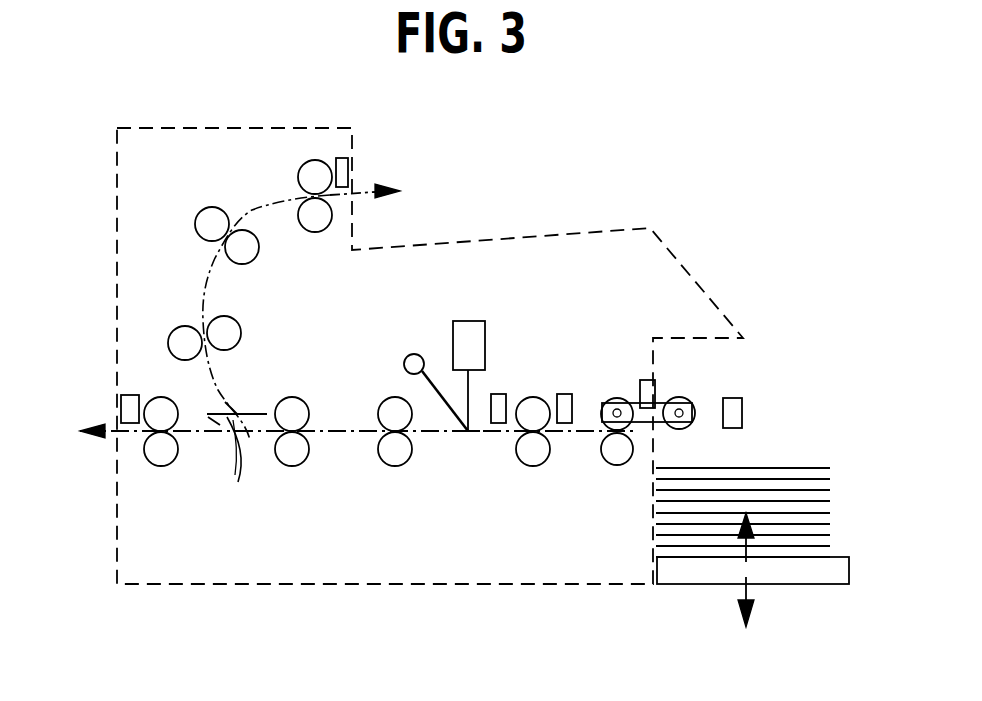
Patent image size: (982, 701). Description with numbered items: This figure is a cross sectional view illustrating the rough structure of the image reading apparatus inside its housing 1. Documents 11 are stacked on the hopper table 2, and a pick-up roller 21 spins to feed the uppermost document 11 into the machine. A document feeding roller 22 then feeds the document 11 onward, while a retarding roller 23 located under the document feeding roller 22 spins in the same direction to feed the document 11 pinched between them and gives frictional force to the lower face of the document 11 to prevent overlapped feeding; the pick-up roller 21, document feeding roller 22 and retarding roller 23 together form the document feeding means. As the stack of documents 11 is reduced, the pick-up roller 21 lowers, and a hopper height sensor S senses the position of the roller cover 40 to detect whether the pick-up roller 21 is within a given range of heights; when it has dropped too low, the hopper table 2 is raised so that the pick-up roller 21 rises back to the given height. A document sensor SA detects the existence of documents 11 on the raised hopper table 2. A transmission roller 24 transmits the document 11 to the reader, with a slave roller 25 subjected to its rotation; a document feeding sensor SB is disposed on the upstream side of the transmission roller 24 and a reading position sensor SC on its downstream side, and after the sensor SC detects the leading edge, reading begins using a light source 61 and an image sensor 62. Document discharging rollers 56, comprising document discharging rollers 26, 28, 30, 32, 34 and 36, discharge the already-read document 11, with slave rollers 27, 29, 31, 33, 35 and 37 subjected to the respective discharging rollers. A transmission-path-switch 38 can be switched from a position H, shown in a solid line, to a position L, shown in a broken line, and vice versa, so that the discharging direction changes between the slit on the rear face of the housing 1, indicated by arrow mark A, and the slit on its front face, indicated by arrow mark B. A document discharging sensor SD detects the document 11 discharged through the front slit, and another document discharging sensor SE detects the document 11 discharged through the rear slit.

The housing 1 is at (117, 137).
The hopper table 2 is at (810, 573).
The documents 11 is at (818, 467).
The pick-up roller 21 is at (692, 400).
The document feeding roller 22 is at (620, 398).
The retarding roller 23 is at (620, 463).
The transmission roller 24 is at (533, 398).
The slave roller 25 is at (530, 463).
The document discharging roller 26 is at (378, 430).
The slave roller 27 is at (397, 463).
The document discharging roller 28 is at (300, 403).
The slave roller 29 is at (292, 463).
The document discharging roller 30 is at (222, 331).
The slave roller 31 is at (183, 342).
The document discharging roller 32 is at (238, 250).
The slave roller 33 is at (207, 224).
The document discharging roller 34 is at (305, 212).
The slave roller 35 is at (310, 178).
The document discharging roller 36 is at (160, 407).
The slave roller 37 is at (155, 460).
The transmission-path-switch 38 is at (233, 420).
The roller cover 40 is at (662, 404).
The document discharging rollers 56 is at (315, 310).
The light source 61 is at (418, 356).
The image sensor 62 is at (478, 330).
The arrow mark A is at (79, 430).
The arrow mark B is at (399, 187).
The position H is at (237, 399).
The position L is at (241, 455).
The hopper height sensor S is at (652, 380).
The document sensor SA is at (742, 412).
The document feeding sensor SB is at (567, 394).
The reading position sensor SC is at (496, 394).
The document discharging sensor SD is at (341, 158).
The document discharging sensor SE is at (124, 400).